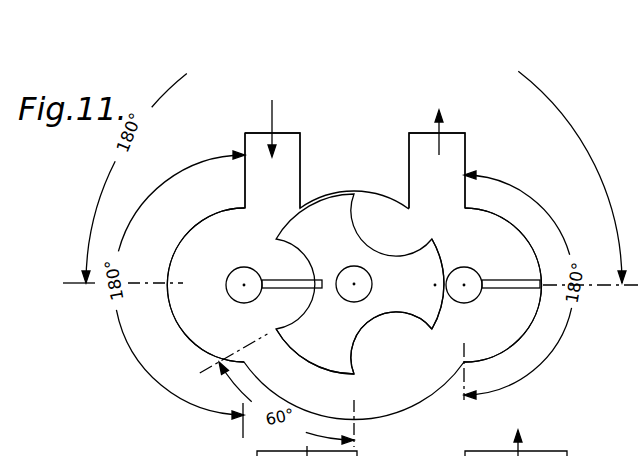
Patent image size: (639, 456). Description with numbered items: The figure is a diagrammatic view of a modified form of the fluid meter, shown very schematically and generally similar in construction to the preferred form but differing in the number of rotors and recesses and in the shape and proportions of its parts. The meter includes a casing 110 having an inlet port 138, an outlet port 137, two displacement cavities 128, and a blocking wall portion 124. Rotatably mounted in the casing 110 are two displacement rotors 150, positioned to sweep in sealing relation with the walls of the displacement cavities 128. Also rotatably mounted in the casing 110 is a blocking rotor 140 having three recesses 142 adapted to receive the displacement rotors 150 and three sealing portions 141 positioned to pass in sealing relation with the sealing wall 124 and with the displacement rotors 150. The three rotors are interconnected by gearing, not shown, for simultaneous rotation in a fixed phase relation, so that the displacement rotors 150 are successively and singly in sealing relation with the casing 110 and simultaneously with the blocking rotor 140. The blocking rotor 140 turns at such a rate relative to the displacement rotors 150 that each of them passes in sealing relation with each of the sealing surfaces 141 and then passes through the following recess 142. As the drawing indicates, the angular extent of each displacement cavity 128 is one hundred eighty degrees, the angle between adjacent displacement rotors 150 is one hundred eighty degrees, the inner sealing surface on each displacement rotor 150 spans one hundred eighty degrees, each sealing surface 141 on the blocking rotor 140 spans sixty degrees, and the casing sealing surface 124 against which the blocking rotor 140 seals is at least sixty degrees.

The casing 110 is at (396, 412).
The blocking wall portion 124 is at (377, 196).
The displacement cavities 128 is at (186, 328).
The outlet port 137 is at (460, 146).
The inlet port 138 is at (290, 141).
The blocking rotor 140 is at (345, 378).
The sealing portions 141 is at (440, 313).
The recesses 142 is at (420, 317).
The displacement rotors 150 is at (241, 309).